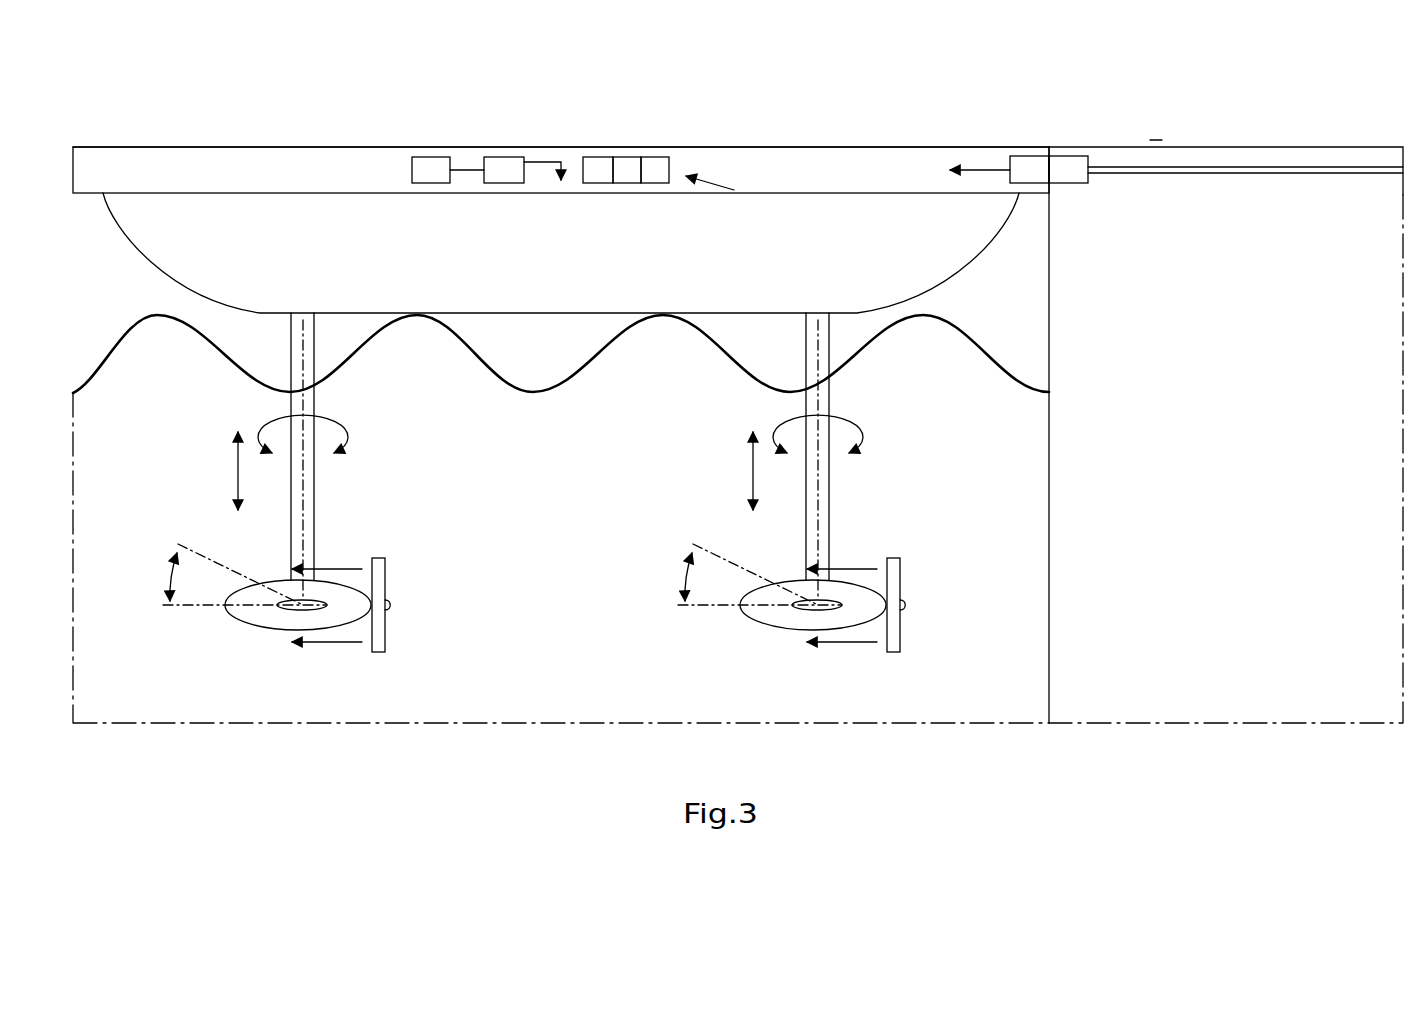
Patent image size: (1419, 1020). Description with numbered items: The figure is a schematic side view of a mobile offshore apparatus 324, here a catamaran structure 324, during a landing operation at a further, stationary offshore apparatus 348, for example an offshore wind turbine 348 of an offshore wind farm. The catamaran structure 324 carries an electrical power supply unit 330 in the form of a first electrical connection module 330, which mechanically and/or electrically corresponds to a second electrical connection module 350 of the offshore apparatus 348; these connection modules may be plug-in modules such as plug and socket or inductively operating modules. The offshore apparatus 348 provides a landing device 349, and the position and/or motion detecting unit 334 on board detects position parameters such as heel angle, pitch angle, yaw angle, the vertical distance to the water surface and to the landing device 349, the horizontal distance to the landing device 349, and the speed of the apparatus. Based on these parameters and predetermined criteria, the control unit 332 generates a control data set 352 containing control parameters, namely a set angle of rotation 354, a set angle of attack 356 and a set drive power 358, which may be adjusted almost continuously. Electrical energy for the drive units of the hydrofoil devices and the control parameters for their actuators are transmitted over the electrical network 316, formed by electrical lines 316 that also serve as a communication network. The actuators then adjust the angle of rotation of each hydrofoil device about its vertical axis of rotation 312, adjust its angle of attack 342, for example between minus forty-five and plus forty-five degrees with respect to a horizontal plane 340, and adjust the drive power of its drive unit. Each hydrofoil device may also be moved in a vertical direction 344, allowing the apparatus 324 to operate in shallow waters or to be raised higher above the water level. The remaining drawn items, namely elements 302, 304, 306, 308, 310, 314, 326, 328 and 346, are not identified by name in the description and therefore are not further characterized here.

The propulsion pod 302 is at (347, 610).
The shaft 304 is at (300, 343).
The propeller hub 306 is at (292, 605).
The rudder plate 308 is at (380, 572).
The flow direction arrows 310 is at (337, 569).
The vertical axis of rotation 312 is at (303, 474).
The rotation about shaft axis 314 is at (347, 425).
The electrical network 316 is at (542, 162).
The mobile offshore apparatus 324 is at (120, 112).
The deck 326 is at (858, 165).
The hull 328 is at (170, 257).
The electrical power supply unit 330 is at (1030, 165).
The control unit 332 is at (502, 165).
The position and/or motion detecting unit 334 is at (432, 165).
The horizontal plane 340 is at (212, 605).
The angle of attack 342 is at (175, 566).
The vertical direction 344 is at (238, 470).
The water surface 346 is at (597, 348).
The offshore apparatus 348 is at (1253, 208).
The landing device 349 is at (1162, 138).
The second electrical connection module 350 is at (1077, 165).
The control data set 352 is at (719, 216).
The set angle of rotation 354 is at (597, 165).
The set angle of attack 356 is at (627, 183).
The set drive power 358 is at (655, 165).